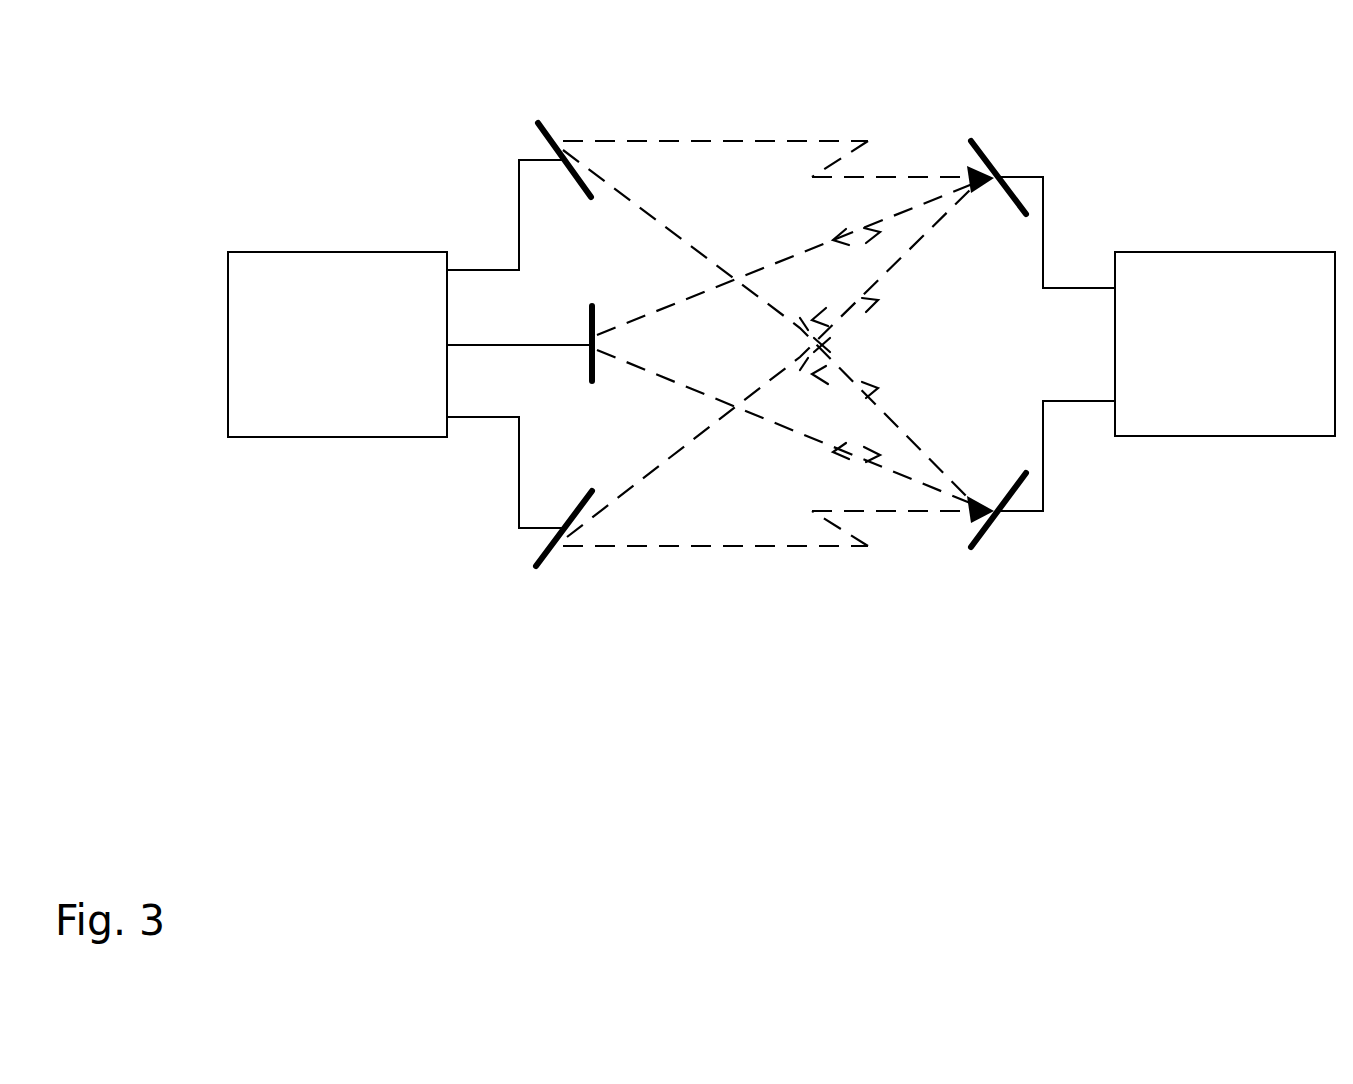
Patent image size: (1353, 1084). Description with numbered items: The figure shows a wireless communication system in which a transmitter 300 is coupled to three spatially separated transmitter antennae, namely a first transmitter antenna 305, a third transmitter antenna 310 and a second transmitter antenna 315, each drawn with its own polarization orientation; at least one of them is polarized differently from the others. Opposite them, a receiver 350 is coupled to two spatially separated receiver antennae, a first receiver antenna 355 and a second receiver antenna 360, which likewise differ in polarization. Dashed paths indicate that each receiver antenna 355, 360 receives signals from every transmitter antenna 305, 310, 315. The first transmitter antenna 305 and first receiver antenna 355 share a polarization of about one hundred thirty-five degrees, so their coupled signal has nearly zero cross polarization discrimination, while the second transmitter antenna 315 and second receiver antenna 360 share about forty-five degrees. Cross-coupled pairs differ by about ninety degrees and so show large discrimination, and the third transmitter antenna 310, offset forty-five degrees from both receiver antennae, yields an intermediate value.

The transmitter 300 is at (438, 429).
The first transmitter antenna 305 is at (536, 121).
The third transmitter antenna 310 is at (589, 312).
The second transmitter antenna 315 is at (591, 488).
The receiver 350 is at (1327, 432).
The first receiver antenna 355 is at (1000, 158).
The second receiver antenna 360 is at (1001, 522).